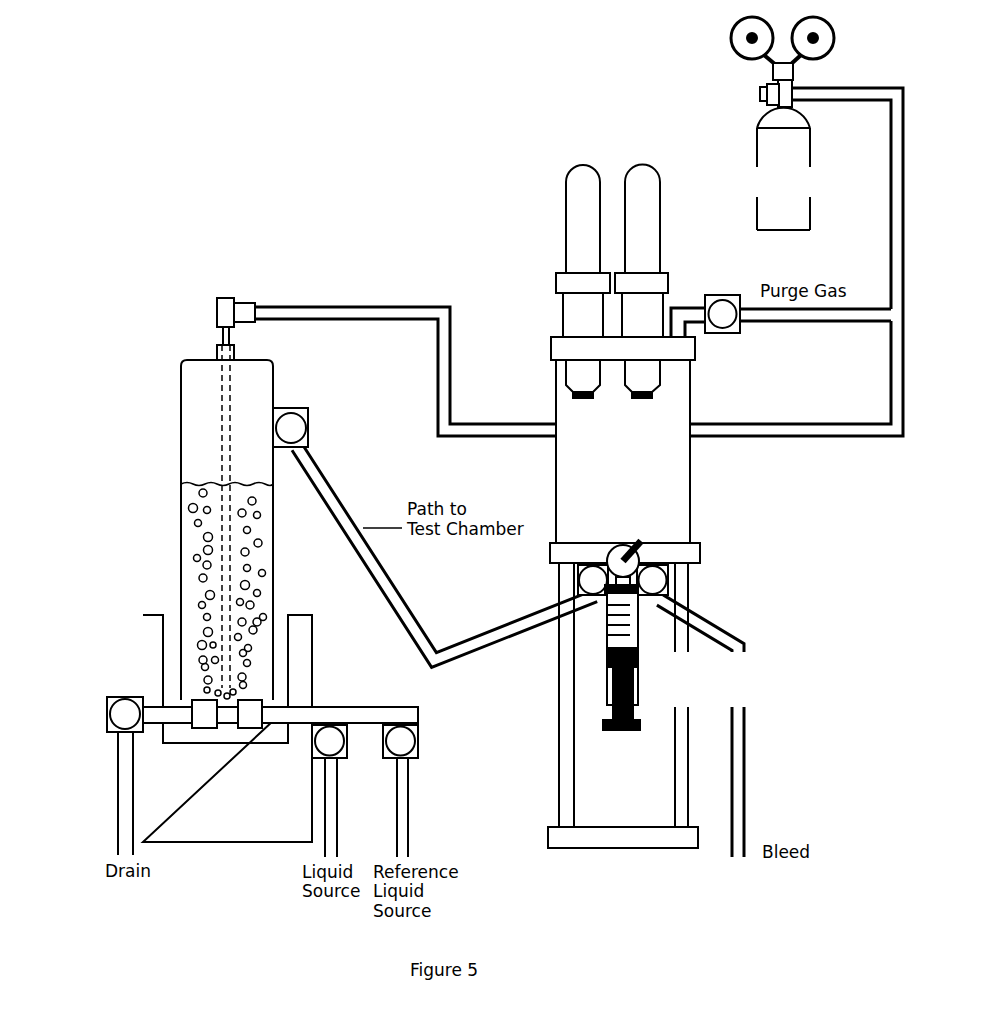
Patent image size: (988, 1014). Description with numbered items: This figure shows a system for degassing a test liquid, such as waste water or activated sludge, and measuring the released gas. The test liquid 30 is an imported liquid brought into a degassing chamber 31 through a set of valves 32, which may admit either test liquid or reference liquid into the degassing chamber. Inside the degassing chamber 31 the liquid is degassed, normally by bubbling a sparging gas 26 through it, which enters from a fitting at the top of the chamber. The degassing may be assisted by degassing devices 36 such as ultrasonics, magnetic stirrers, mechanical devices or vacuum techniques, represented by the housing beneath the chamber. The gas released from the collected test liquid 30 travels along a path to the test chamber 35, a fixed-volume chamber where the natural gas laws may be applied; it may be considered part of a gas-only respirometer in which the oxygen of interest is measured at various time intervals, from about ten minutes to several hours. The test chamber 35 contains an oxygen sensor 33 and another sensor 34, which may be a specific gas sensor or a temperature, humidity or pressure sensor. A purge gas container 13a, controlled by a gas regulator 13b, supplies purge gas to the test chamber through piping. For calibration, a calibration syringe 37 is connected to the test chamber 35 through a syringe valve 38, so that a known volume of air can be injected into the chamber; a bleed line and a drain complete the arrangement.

The purge gas container 13a is at (793, 169).
The gas regulator 13b is at (760, 95).
The sparging gas 26 is at (405, 356).
The test liquid 30 is at (181, 563).
The degassing chamber 31 is at (181, 455).
The set of valves 32 is at (365, 791).
The oxygen sensor 33 is at (564, 243).
The another sensor 34 is at (663, 253).
The test chamber 35 is at (624, 592).
The degassing devices 36 is at (280, 728).
The calibration syringe 37 is at (643, 695).
The syringe valve 38 is at (647, 552).